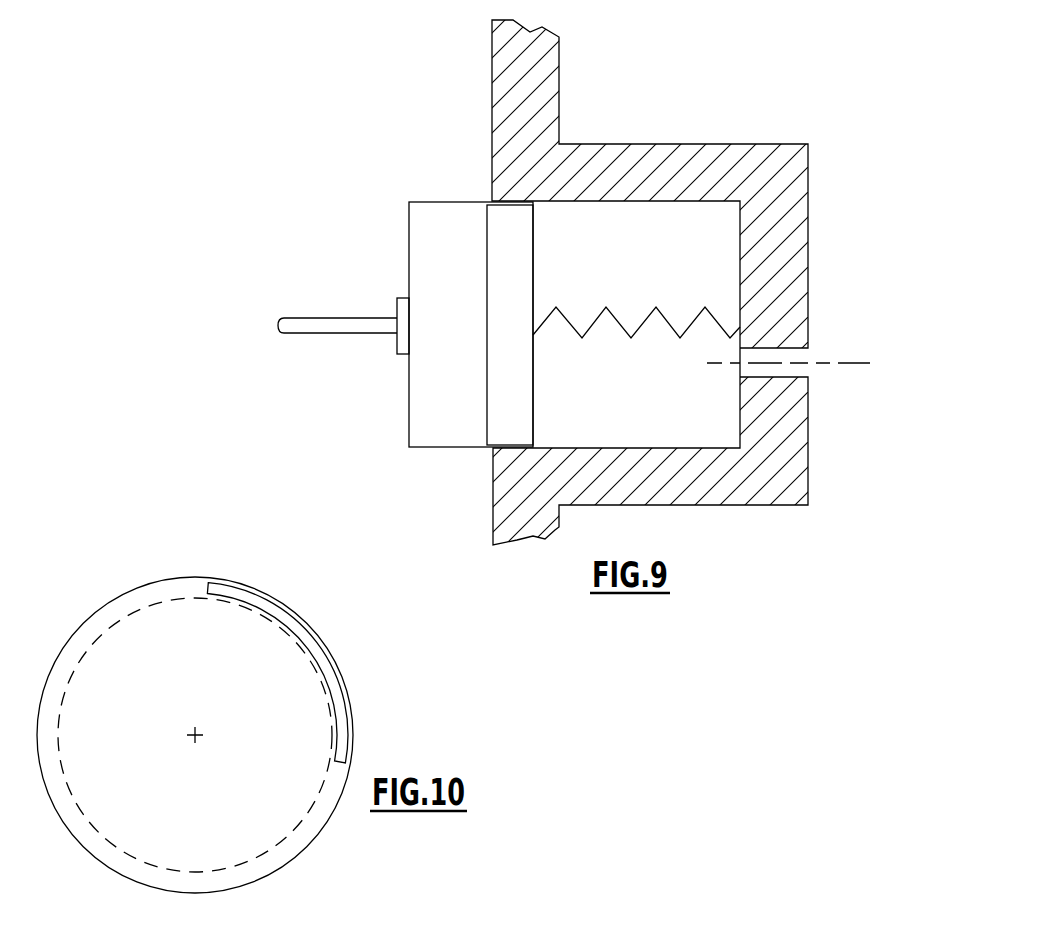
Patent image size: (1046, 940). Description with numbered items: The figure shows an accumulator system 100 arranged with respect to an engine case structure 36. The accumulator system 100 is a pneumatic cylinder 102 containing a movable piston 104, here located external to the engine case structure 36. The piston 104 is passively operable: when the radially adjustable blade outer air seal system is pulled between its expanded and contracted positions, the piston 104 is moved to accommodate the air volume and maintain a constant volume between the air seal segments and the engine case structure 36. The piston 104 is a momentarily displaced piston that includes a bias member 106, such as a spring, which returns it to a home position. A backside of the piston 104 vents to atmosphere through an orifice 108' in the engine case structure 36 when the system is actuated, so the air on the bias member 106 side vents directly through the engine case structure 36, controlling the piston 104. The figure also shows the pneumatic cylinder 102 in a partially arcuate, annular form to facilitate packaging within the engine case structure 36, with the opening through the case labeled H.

In FIG. 9, the engine case structure 36 is at (617, 144).
In FIG. 10, the engine case structure 36 is at (126, 592).
In FIG. 9, the accumulator system 100 is at (727, 162).
In FIG. 9, the pneumatic cylinder 102 is at (447, 217).
In FIG. 10, the pneumatic cylinder 102 is at (322, 658).
In FIG. 9, the piston 104 is at (503, 222).
In FIG. 9, the bias member 106 is at (667, 320).
In FIG. 9, the orifice 108' is at (790, 344).
In FIG. 9, the hole in head wall H is at (500, 462).